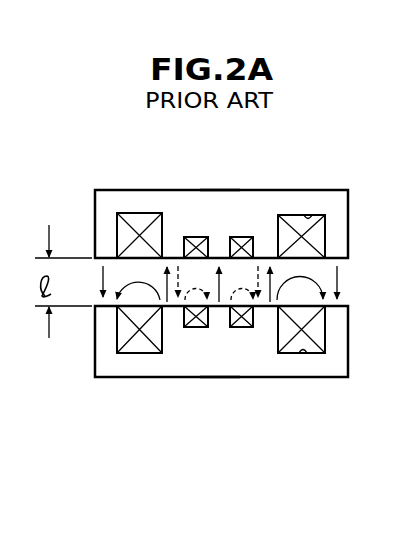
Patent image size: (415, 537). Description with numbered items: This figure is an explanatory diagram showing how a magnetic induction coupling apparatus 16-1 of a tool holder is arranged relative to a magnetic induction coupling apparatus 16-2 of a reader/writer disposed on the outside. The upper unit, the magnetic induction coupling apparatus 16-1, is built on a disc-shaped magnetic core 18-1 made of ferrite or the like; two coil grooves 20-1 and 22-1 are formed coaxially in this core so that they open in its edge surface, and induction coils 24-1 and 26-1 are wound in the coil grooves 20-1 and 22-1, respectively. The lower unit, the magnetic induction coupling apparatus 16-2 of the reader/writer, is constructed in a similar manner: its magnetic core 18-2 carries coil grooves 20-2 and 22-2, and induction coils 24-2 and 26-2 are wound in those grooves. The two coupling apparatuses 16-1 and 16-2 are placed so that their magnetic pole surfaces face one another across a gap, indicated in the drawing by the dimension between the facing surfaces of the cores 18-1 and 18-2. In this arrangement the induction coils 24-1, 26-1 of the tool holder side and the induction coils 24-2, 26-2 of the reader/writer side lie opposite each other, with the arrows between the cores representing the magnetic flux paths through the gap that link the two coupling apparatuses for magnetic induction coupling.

The magnetic induction coupling apparatus 16-1 is at (101, 185).
The magnetic induction coupling apparatus 16-2 is at (103, 388).
The magnetic core 18-1 is at (240, 200).
The magnetic core 18-2 is at (245, 364).
The coil groove 20-1 is at (246, 237).
The coil groove 20-2 is at (245, 330).
The coil groove 22-1 is at (311, 215).
The coil groove 22-2 is at (304, 352).
The induction coil 24-1 is at (196, 237).
The induction coil 24-2 is at (195, 330).
The induction coil 26-1 is at (142, 220).
The induction coil 26-2 is at (141, 350).